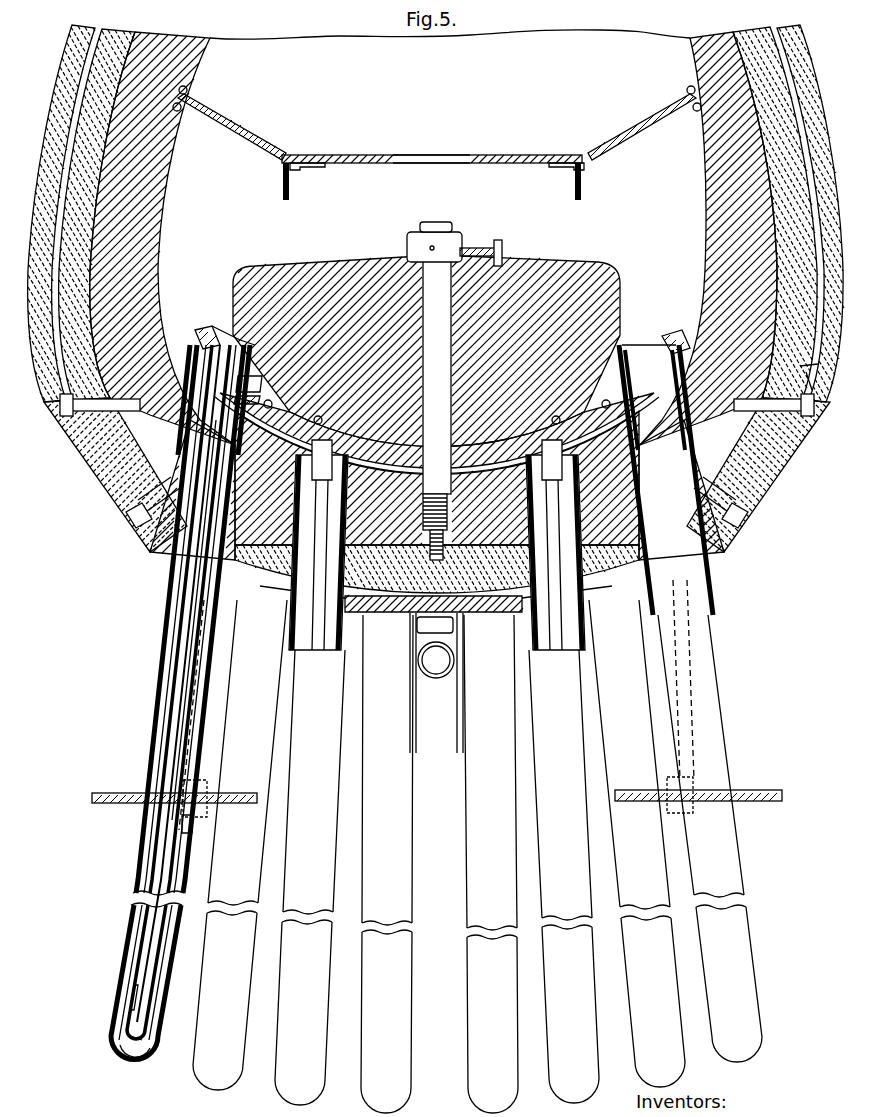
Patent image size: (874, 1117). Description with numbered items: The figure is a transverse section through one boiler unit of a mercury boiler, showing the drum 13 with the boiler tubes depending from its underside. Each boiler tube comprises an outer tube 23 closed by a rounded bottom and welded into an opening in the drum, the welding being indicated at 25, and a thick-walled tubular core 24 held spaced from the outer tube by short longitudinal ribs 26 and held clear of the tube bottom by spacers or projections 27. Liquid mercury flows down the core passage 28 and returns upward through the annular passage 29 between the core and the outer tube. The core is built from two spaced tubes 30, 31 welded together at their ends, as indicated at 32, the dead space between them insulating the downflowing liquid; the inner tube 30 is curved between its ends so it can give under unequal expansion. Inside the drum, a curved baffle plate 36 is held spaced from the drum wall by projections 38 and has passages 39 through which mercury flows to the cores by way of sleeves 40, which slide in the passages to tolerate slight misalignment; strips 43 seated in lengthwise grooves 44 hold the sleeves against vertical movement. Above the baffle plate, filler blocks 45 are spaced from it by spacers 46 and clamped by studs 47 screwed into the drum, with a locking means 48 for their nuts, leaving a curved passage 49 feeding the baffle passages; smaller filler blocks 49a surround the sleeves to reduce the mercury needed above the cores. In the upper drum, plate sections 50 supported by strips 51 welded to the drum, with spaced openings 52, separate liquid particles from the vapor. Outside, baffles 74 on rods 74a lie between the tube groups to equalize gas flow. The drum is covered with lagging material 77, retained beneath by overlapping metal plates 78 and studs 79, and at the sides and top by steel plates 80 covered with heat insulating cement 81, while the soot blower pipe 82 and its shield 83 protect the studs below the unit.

The drum 13 is at (150, 240).
The outer tube 23 is at (167, 640).
The tubular core 24 is at (172, 700).
The welding 25 is at (200, 338).
The ribs 26 is at (186, 826).
The spacers or projections 27 is at (126, 1060).
The core passage 28 is at (318, 614).
The annular passage 29 is at (155, 765).
The inner tube 30 is at (188, 710).
The outer core tube 31 is at (205, 727).
The welds 32 is at (142, 1058).
The baffle plate 36 is at (605, 388).
The projections 38 is at (668, 345).
The baffle plate passages 39 is at (640, 350).
The sleeves 40 is at (636, 368).
The strips 43 is at (250, 406).
The grooves 44 is at (250, 385).
The filler blocks 45 is at (555, 266).
The spacers 46 is at (610, 384).
The studs 47 is at (445, 228).
The locking means 48 is at (480, 249).
The curved passage 49 is at (253, 345).
The filler blocks surrounding sleeves 49a is at (213, 334).
The plate sections 50 is at (370, 154).
The strips 51 is at (182, 106).
The openings 52 is at (444, 154).
The baffles 74 is at (105, 806).
The rods 74a is at (718, 678).
The lagging material 77 is at (742, 455).
The metal plates 78 is at (626, 575).
The studs 79 is at (752, 528).
The steel plates 80 is at (812, 400).
The heat insulating cement 81 is at (812, 372).
The soot blower pipe 82 is at (437, 682).
The shield 83 is at (458, 662).